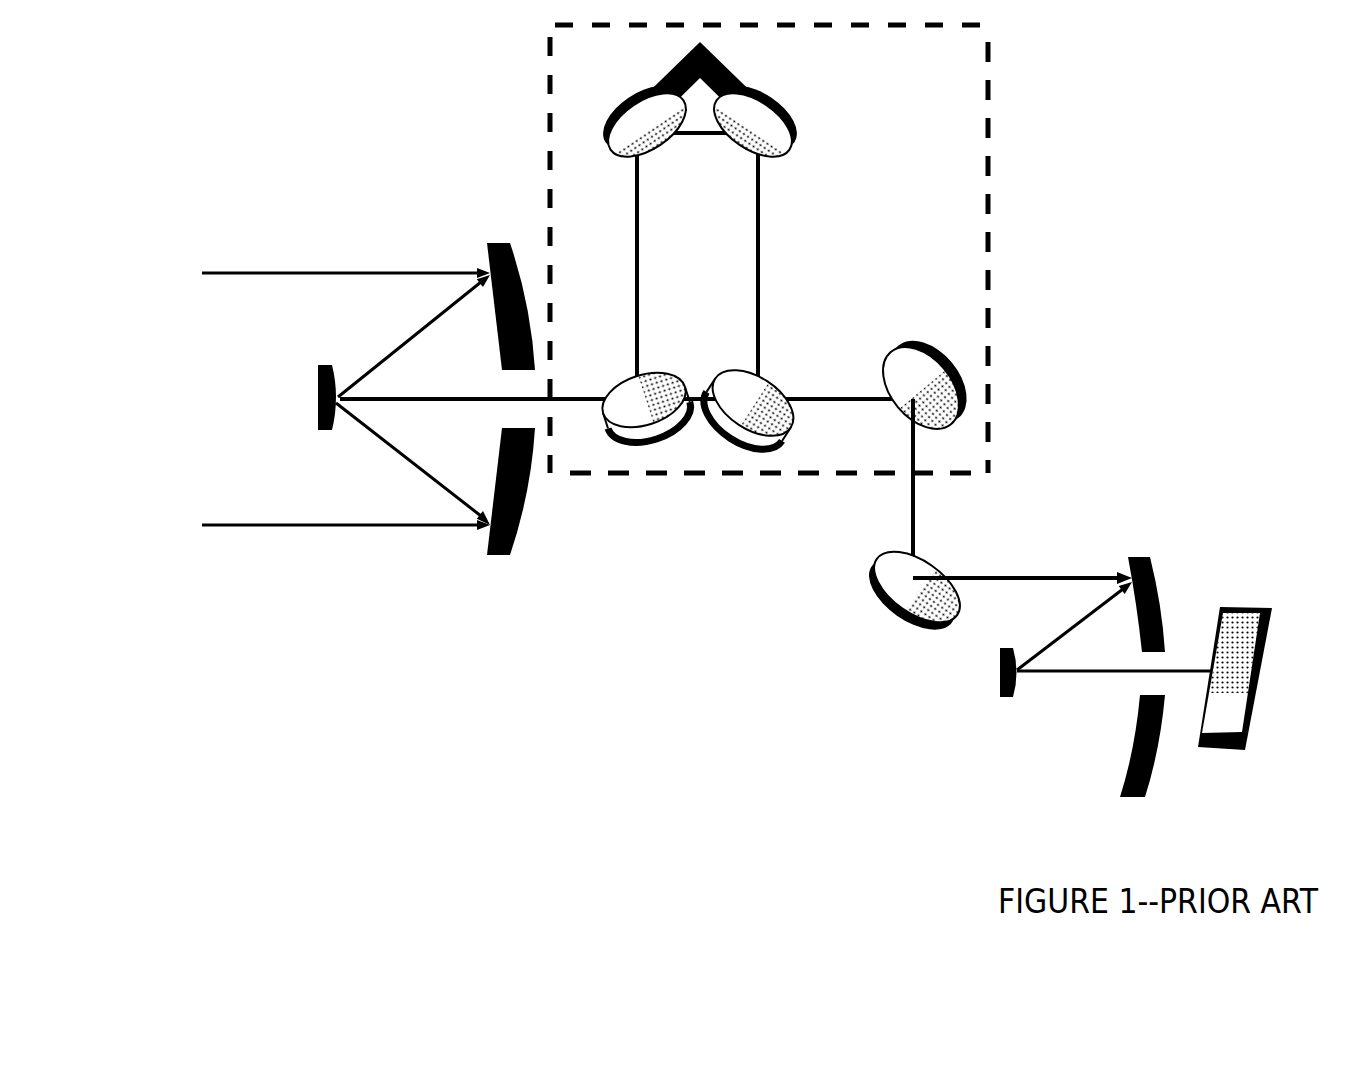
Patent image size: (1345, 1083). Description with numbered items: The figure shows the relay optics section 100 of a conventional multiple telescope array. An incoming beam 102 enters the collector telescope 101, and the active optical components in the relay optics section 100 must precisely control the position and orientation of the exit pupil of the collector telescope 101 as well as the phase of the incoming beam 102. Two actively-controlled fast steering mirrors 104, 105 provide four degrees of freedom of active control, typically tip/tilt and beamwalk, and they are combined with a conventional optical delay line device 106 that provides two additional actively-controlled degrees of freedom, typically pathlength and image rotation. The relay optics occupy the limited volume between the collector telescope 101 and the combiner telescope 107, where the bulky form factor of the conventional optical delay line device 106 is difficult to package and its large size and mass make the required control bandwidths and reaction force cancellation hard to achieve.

The relay optics section 100 is at (990, 268).
The collector telescope 101 is at (492, 556).
The incoming beam 102 is at (258, 277).
The fast steering mirror 104 is at (618, 392).
The fast steering mirror 105 is at (770, 386).
The conventional optical delay line device 106 is at (730, 60).
The combiner telescope 107 is at (1160, 592).